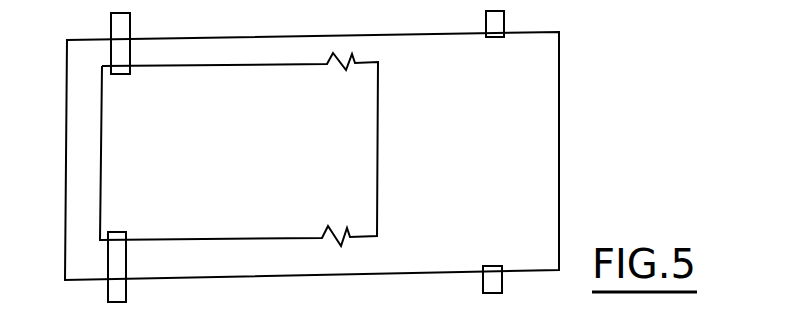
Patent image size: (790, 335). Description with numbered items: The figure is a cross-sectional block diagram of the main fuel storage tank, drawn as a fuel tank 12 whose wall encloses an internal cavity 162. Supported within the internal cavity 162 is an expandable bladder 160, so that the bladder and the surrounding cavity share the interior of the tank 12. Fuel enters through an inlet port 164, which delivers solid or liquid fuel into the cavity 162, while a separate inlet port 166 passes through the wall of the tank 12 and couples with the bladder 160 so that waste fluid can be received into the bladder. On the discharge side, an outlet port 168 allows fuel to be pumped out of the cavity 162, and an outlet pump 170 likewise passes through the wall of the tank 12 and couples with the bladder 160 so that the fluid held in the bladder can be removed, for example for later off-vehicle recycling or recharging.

The fuel tank 12 is at (312, 180).
The expandable bladder 160 is at (378, 108).
The internal cavity 162 is at (513, 162).
The inlet port 164 is at (502, 288).
The inlet port 166 is at (126, 298).
The outlet port 168 is at (505, 27).
The outlet pump 170 is at (131, 27).